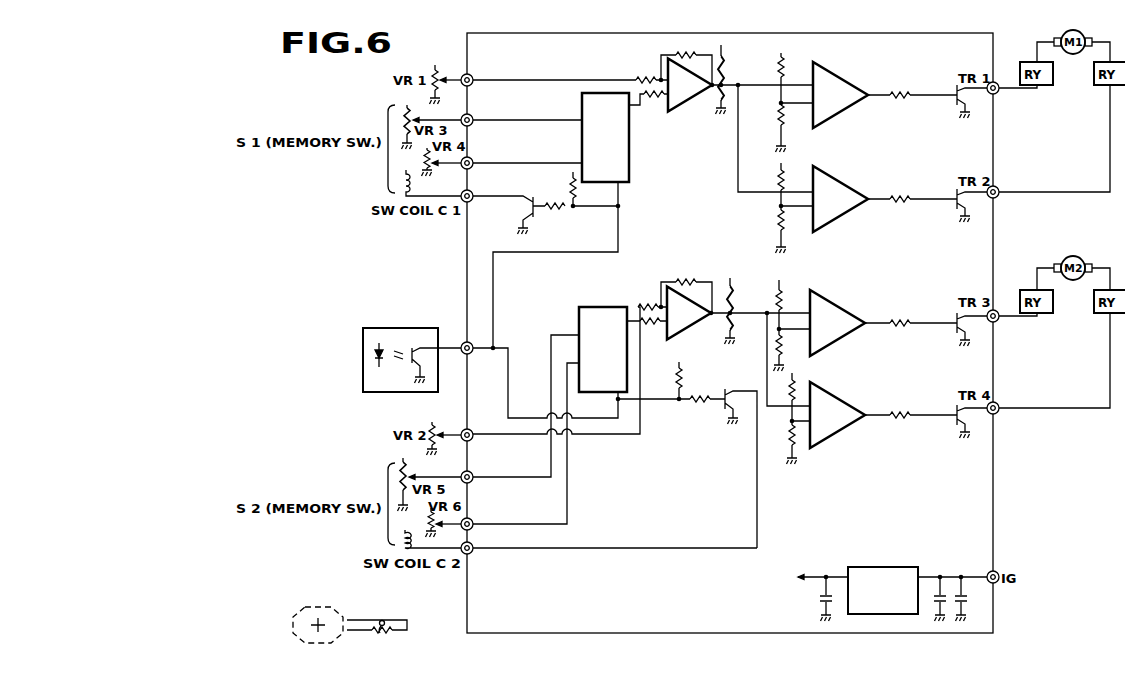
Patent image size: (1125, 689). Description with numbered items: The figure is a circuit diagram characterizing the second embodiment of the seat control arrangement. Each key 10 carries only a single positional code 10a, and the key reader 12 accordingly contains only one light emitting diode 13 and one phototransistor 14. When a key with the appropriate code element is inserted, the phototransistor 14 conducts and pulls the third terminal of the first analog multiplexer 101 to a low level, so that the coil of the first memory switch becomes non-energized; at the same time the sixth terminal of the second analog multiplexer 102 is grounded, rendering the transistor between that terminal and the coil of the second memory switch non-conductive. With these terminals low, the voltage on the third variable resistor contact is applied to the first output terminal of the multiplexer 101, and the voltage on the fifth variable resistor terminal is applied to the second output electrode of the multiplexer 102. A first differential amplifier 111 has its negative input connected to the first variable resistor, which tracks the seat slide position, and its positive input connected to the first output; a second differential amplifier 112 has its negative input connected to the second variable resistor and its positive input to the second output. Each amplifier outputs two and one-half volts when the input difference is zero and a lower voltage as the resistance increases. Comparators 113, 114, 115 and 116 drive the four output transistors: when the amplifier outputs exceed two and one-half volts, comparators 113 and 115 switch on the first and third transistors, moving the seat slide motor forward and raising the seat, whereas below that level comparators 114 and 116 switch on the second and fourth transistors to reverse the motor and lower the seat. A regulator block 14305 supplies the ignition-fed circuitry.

The analog multiplexer 101 is at (582, 101).
The analog multiplexer 102 is at (579, 316).
The first differential amplifier 111 is at (690, 85).
The second differential amplifier 112 is at (689, 313).
The comparator 113 is at (840, 95).
The comparator 114 is at (840, 199).
The comparator 115 is at (837, 323).
The comparator 116 is at (837, 415).
The voltage regulator 14305 is at (883, 590).
The key reader 12 is at (404, 342).
The light emitting diode 13 is at (389, 351).
The phototransistor 14 is at (433, 359).
The key 10 is at (350, 623).
The positional code 10a is at (376, 631).